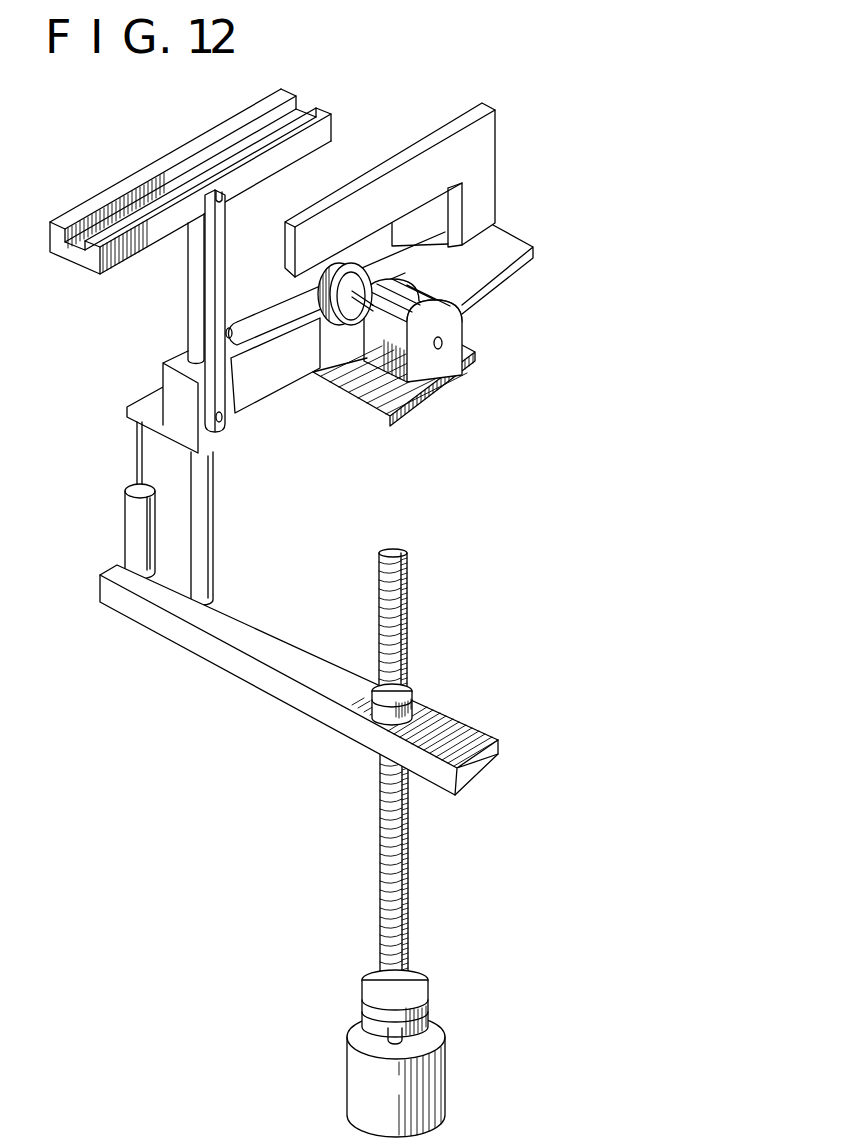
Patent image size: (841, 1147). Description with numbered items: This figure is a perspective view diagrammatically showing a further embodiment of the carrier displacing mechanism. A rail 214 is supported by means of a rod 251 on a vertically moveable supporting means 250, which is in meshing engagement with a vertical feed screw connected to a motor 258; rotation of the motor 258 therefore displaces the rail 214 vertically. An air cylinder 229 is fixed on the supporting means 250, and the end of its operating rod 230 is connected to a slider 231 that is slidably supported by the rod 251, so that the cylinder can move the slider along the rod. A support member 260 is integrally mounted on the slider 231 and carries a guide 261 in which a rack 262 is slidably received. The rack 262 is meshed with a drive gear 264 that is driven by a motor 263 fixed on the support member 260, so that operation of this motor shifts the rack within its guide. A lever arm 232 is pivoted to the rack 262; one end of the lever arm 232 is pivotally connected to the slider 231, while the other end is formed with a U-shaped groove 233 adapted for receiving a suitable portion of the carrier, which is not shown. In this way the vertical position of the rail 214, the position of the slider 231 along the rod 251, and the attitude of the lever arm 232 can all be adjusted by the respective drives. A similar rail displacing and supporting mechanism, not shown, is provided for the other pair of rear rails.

The rail 214 is at (331, 108).
The air cylinder 229 is at (125, 523).
The operating rod 230 is at (139, 450).
The slider 231 is at (168, 390).
The lever arm 232 is at (216, 264).
The U-shaped groove 233 is at (217, 192).
The supporting means 250 is at (250, 650).
The rod 251 is at (213, 520).
The motor 258 is at (437, 1063).
The support member 260 is at (466, 276).
The guide 261 is at (440, 165).
The rack 262 is at (388, 236).
The motor 263 is at (414, 324).
The drive gear 264 is at (352, 312).